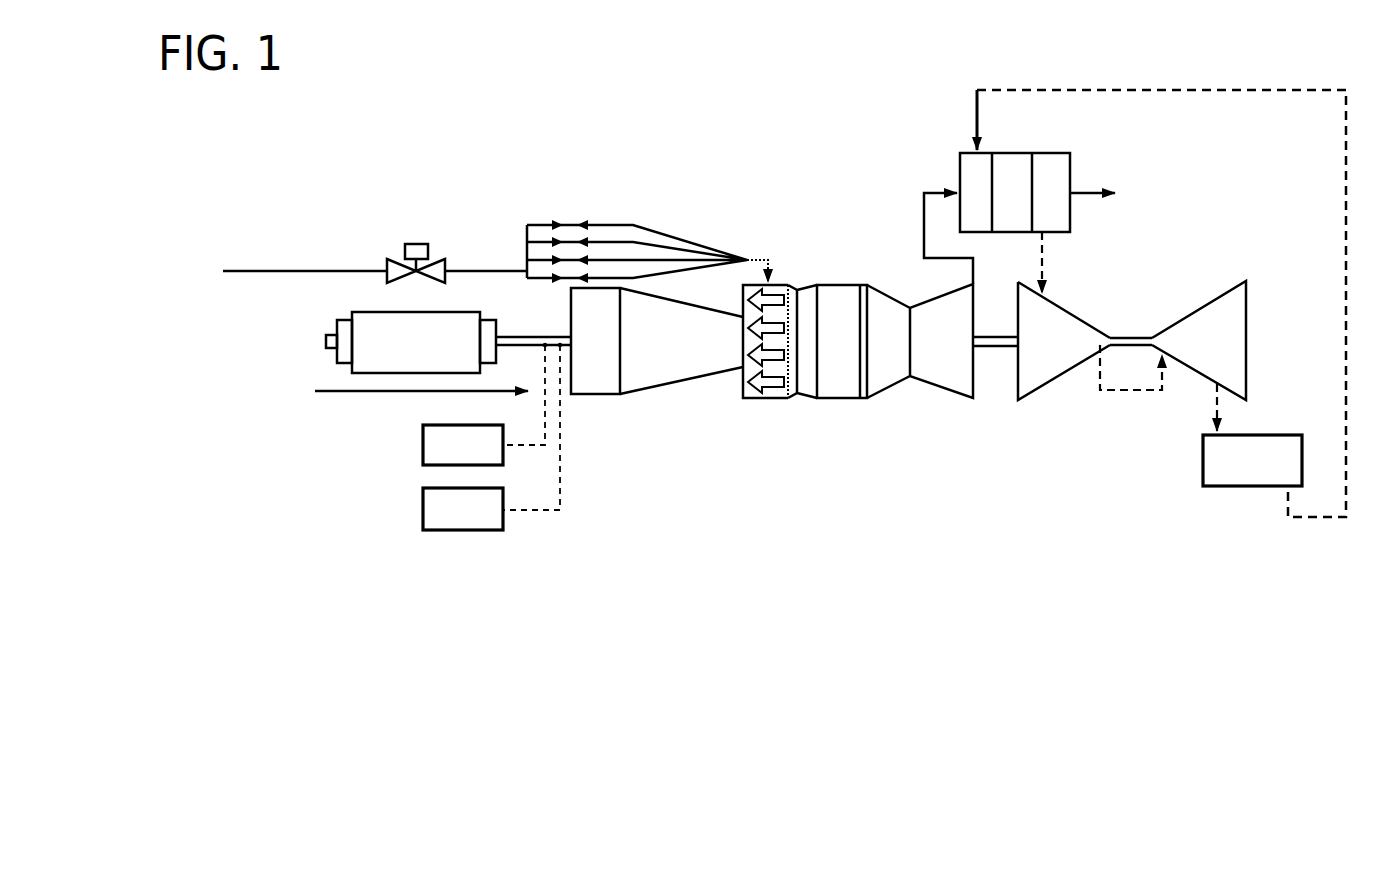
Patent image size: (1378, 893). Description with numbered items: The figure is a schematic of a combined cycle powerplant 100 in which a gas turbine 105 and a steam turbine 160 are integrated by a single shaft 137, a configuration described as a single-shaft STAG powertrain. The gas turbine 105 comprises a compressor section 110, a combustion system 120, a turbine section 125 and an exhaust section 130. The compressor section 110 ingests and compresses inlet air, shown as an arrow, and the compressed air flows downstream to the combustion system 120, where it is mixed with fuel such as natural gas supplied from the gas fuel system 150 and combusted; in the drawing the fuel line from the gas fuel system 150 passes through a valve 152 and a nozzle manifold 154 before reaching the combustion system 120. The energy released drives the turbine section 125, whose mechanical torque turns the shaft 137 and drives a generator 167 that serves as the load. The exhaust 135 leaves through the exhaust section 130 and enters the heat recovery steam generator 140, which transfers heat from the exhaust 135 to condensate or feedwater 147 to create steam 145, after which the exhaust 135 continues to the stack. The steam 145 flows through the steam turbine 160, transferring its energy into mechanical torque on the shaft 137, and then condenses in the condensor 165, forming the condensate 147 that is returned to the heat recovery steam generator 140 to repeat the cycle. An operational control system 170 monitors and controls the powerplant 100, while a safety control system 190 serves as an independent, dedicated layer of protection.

The powerplant 100 is at (166, 314).
The gas turbine 105 is at (743, 433).
The compressor section 110 is at (631, 401).
The combustion system 120 is at (791, 411).
The turbine section 125 is at (851, 411).
The exhaust section 130 is at (910, 408).
The exhaust 135 is at (924, 225).
The shaft 137 is at (525, 336).
The heat recovery steam generator (HRSG) 140 is at (1028, 202).
The steam 145 is at (1046, 251).
The condensate or feedwater 147 is at (1022, 90).
The gas fuel system 150 is at (277, 257).
The fuel control valve 152 is at (405, 250).
The fuel nozzle manifold 154 is at (530, 226).
The steam turbine 160 is at (1056, 408).
The condensor 165 is at (1273, 477).
The generator 167 is at (370, 312).
The operational control system 170 is at (483, 457).
The safety control system 190 is at (483, 520).